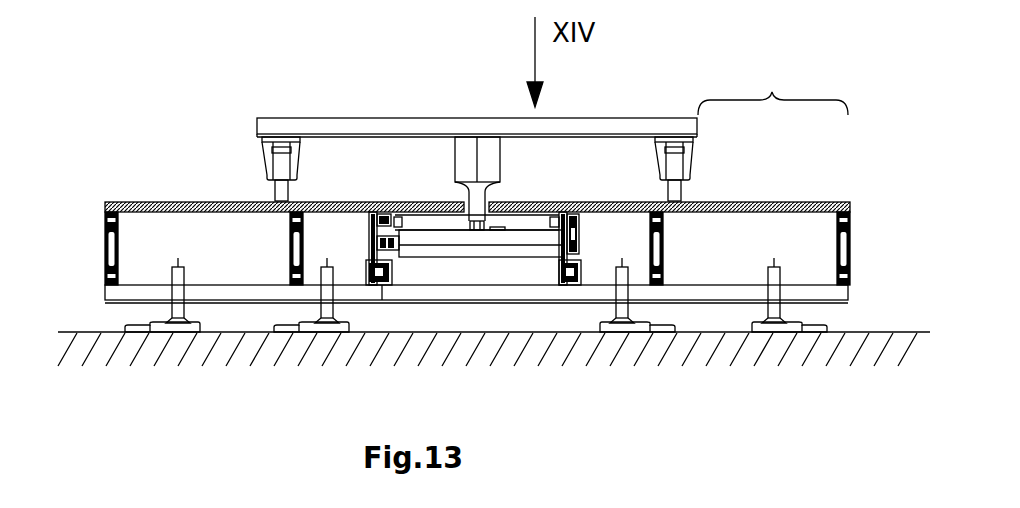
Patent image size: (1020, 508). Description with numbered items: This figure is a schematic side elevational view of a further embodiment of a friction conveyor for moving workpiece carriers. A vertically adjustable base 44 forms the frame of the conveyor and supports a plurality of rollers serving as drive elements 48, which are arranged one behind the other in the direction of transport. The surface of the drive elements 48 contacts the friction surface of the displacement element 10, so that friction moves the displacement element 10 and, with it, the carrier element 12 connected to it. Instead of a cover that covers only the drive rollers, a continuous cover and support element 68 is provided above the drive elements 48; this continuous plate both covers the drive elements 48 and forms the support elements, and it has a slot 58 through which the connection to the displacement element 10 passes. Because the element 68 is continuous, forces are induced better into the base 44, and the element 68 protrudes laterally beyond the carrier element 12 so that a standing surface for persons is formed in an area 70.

The displacement element 10 is at (492, 283).
The carrier element 12 is at (410, 118).
The base 44 is at (111, 325).
The drive elements 48 is at (418, 249).
The slot 58 is at (486, 198).
The cover and support element 68 is at (172, 201).
The area 70 is at (773, 87).